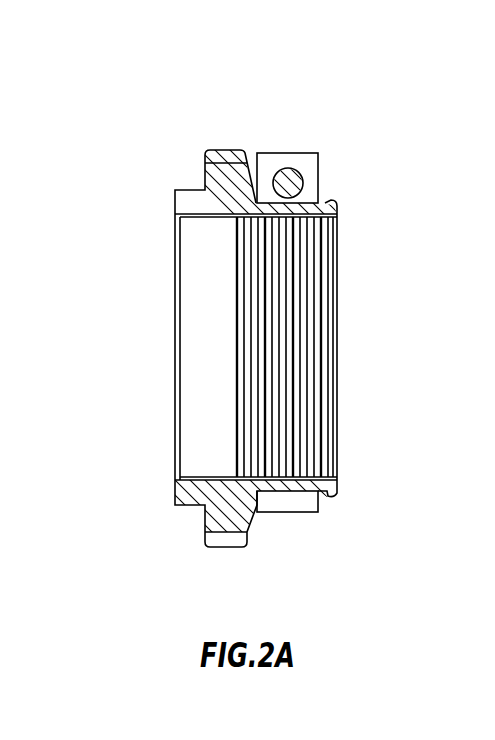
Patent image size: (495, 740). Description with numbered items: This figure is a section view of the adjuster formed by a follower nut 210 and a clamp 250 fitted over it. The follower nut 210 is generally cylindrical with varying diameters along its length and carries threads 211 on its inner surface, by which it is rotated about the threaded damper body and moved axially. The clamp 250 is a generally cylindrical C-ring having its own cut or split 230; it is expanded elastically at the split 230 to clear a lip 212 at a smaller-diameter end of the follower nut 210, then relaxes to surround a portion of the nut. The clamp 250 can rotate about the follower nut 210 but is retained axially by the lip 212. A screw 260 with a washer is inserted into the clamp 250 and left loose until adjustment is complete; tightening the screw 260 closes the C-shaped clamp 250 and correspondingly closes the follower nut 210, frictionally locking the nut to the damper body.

The follower nut 210 is at (223, 513).
The threads 211 is at (305, 290).
The lip 212 is at (340, 493).
The split 230 is at (310, 168).
The clamp 250 is at (275, 500).
The screw 260 is at (283, 176).